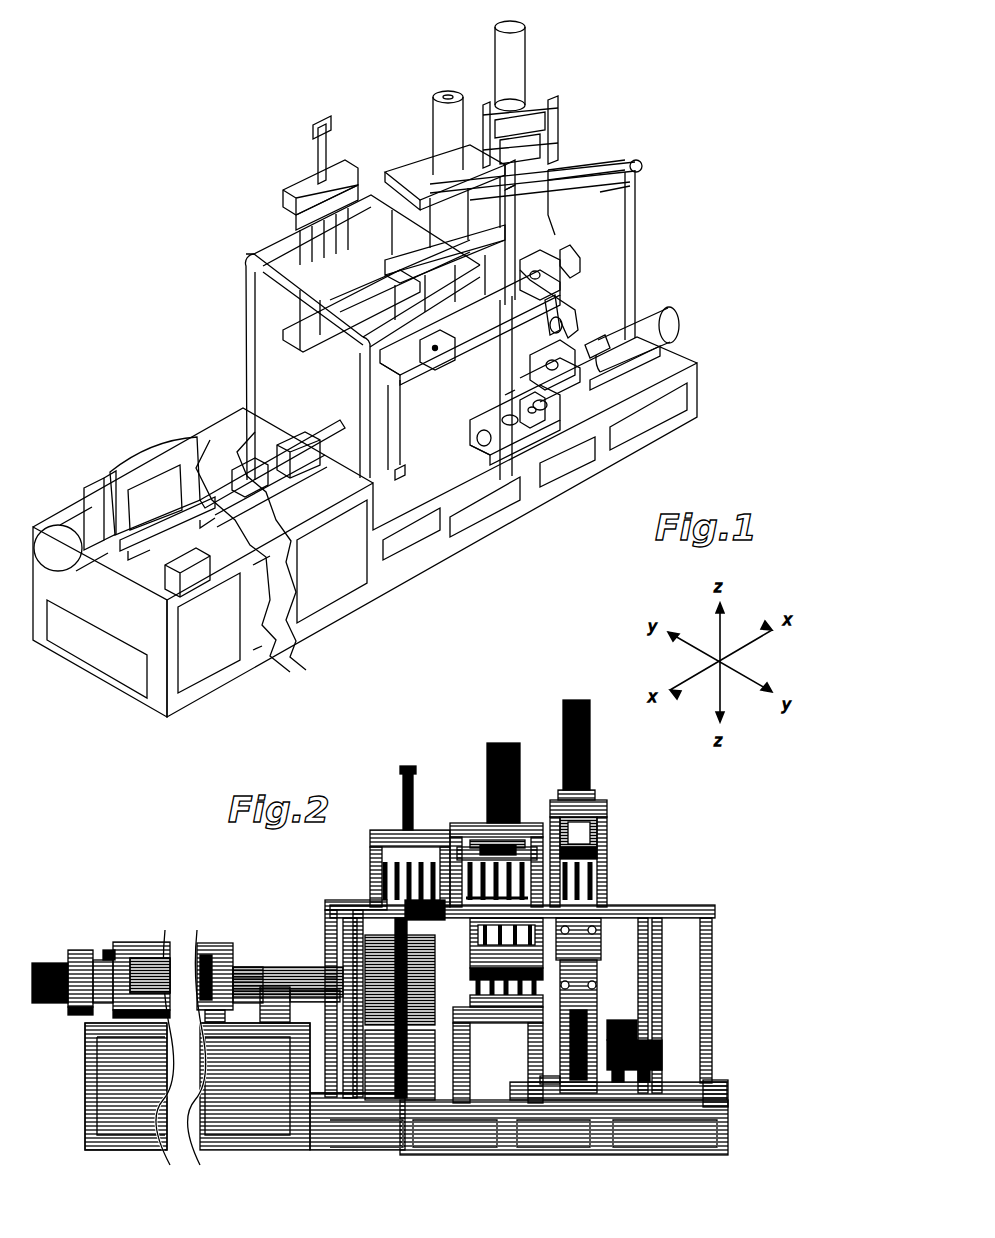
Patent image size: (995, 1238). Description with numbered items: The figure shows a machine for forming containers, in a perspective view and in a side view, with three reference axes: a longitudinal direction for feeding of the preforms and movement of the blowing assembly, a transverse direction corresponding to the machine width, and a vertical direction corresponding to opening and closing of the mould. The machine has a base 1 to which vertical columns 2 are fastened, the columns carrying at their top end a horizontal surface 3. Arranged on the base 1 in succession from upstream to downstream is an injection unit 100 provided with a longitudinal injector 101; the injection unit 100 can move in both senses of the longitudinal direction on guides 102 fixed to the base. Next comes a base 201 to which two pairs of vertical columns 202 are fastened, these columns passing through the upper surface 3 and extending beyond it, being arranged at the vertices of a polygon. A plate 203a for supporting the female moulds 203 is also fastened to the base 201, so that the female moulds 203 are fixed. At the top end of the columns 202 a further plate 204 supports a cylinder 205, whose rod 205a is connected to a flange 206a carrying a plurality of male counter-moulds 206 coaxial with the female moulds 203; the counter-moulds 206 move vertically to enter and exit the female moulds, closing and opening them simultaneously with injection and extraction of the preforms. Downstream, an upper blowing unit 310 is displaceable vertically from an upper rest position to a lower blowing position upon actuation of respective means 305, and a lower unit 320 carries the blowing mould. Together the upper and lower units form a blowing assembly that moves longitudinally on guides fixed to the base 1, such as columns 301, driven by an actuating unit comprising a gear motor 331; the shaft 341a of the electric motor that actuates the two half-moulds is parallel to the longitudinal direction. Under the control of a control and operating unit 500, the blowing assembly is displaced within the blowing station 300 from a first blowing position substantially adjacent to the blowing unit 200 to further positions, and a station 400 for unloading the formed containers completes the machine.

In FIG. 1, the base 1 is at (655, 410).
In FIG. 1, the vertical columns 2 is at (628, 200).
In FIG. 1, the horizontal surface 3 is at (633, 162).
In FIG. 2, the horizontal surface 3 is at (713, 907).
In FIG. 1, the injection unit 100 is at (145, 455).
In FIG. 2, the injection unit 100 is at (125, 950).
In FIG. 2, the longitudinal injector 101 is at (393, 998).
In FIG. 1, the guides 102 is at (300, 452).
In FIG. 2, the guides 102 is at (243, 995).
In FIG. 1, the blowing unit 200 is at (368, 125).
In FIG. 1, the base 201 is at (483, 432).
In FIG. 2, the base 201 is at (487, 1013).
In FIG. 1, the vertical columns 202 is at (447, 460).
In FIG. 2, the vertical columns 202 is at (467, 957).
In FIG. 2, the female moulds 203 is at (480, 970).
In FIG. 2, the plate 203a is at (510, 990).
In FIG. 1, the plate 204 is at (437, 185).
In FIG. 1, the cylinder 205 is at (467, 88).
In FIG. 2, the cylinder 205 is at (504, 762).
In FIG. 2, the rod 205a is at (488, 852).
In FIG. 2, the male counter-moulds 206 is at (560, 883).
In FIG. 2, the flange 206a is at (523, 846).
In FIG. 1, the blowing station 300 is at (566, 94).
In FIG. 1, the columns 301 is at (612, 357).
In FIG. 2, the columns 301 is at (683, 1088).
In FIG. 1, the actuating means 305 is at (510, 65).
In FIG. 2, the actuating means 305 is at (592, 745).
In FIG. 2, the upper blowing unit 310 is at (598, 860).
In FIG. 2, the lower unit 320 is at (588, 1105).
In FIG. 2, the gear motor 331 is at (642, 1020).
In FIG. 2, the shaft 341a is at (665, 1052).
In FIG. 1, the unloading station 400 is at (214, 342).
In FIG. 1, the control and operating unit 500 is at (175, 572).